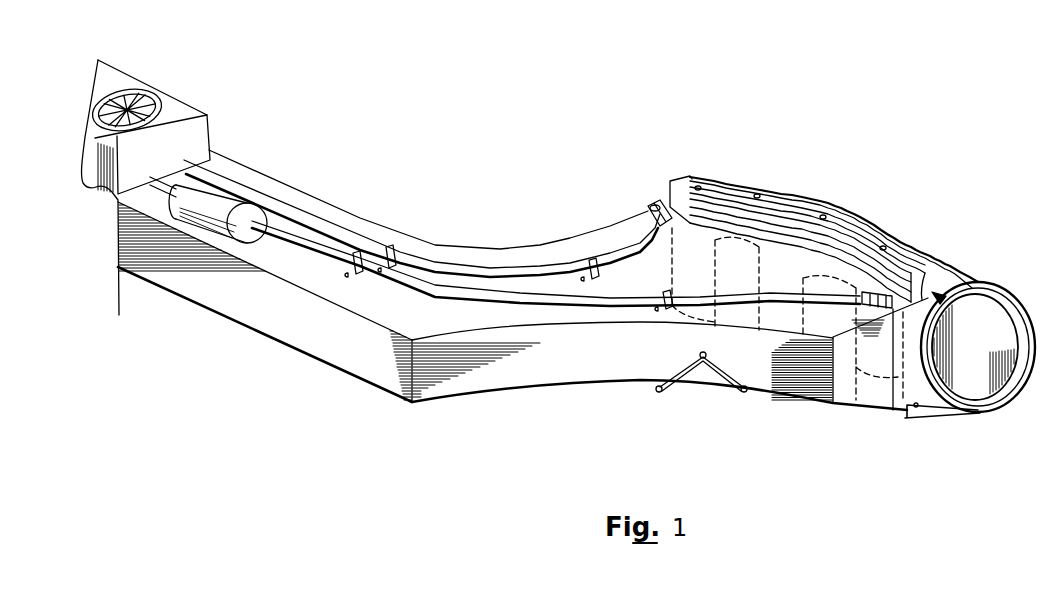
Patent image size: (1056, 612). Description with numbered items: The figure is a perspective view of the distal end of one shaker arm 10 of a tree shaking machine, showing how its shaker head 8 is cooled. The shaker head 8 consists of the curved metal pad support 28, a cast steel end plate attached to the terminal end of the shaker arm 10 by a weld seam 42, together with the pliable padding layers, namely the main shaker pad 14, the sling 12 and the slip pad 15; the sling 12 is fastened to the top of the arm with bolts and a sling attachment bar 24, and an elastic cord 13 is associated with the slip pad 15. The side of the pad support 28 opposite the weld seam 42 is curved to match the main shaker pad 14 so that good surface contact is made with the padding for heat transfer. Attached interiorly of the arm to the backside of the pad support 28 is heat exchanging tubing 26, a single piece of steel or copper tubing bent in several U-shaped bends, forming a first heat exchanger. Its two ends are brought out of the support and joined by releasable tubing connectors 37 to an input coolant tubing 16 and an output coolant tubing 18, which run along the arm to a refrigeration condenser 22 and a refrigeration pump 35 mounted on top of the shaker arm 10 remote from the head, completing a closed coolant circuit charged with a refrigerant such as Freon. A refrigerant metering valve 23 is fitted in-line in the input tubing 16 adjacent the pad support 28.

The shaker head 8 is at (847, 205).
The shaker arm 10 is at (558, 372).
The sling 12 is at (982, 295).
The elastic cord 13 is at (683, 380).
The main shaker pad 14 is at (978, 383).
The slip pad 15 is at (893, 236).
The input coolant tubing 16 is at (322, 226).
The output coolant tubing 18 is at (330, 262).
The refrigeration condenser 22 is at (168, 92).
The refrigerant metering valve 23 is at (650, 212).
The sling attachment bar 24 is at (688, 178).
The heat exchanging tubing 26 is at (773, 334).
The curved metal pad support 28 is at (897, 413).
The refrigeration pump 35 is at (207, 222).
The releasable tubing connector 37 is at (664, 203).
The weld seam 42 is at (703, 228).